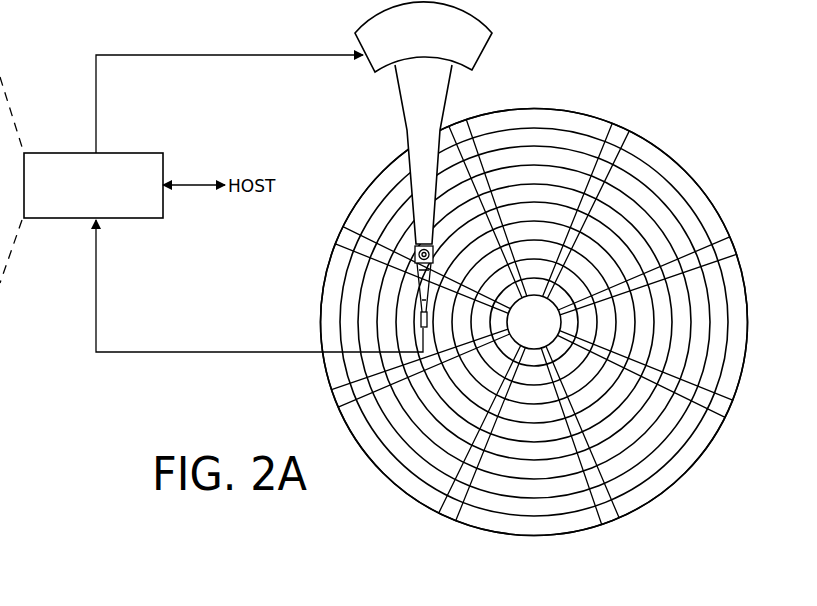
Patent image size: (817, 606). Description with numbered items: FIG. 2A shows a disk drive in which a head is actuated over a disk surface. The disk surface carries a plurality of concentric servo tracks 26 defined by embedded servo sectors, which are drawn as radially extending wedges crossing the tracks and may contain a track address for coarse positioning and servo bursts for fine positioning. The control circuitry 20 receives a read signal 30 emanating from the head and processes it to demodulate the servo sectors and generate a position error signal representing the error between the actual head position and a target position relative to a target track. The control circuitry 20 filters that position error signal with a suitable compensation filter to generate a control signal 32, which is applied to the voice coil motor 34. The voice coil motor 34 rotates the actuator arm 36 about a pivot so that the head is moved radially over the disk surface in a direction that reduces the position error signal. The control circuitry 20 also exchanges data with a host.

The control circuitry 20 is at (131, 152).
The servo tracks 26 is at (532, 138).
The read signal 30 is at (218, 350).
The control signal 32 is at (94, 90).
The voice coil motor 34 is at (370, 64).
The actuator arm 36 is at (406, 138).